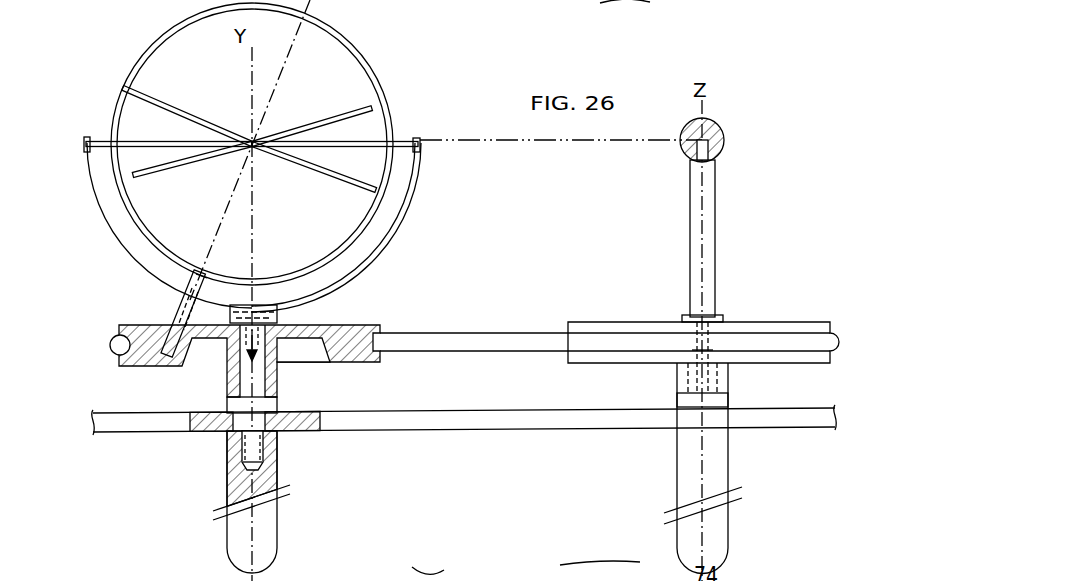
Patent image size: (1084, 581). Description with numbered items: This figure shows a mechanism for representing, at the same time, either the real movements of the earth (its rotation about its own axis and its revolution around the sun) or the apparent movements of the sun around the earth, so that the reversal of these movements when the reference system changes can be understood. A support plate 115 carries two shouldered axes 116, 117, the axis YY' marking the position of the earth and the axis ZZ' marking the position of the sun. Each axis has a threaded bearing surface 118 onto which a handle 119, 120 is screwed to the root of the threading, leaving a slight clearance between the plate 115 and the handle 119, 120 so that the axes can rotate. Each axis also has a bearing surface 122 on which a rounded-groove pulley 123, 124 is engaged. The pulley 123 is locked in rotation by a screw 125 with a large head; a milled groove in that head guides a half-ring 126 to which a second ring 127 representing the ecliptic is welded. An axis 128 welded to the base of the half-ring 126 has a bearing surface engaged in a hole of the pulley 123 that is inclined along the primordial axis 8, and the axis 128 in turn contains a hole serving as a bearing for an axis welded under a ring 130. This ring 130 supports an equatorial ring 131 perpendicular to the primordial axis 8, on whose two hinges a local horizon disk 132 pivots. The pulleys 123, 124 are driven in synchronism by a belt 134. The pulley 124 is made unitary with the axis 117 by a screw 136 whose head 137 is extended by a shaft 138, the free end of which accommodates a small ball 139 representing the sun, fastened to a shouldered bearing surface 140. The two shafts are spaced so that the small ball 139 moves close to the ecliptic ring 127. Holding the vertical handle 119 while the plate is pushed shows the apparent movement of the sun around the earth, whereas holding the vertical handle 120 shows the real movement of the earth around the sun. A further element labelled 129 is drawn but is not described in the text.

The primordial axis 8 is at (378, 79).
The support plate 115 is at (442, 428).
The shouldered axis 116 is at (278, 403).
The shouldered axis 117 is at (728, 403).
The threaded bearing surface 118 is at (265, 448).
The handle 119 is at (270, 490).
The handle 120 is at (728, 470).
The bearing surface 122 is at (223, 398).
The rounded-groove pulley 123 is at (142, 328).
The rounded-groove pulley 124 is at (807, 322).
The screw 125 is at (280, 314).
The half-ring 126 is at (108, 235).
The ring 127 is at (86, 140).
The axis 128 is at (177, 315).
The ball 129 is at (91, 333).
The ring 130 is at (129, 62).
The equatorial ring 131 is at (388, 178).
The local horizon disk 132 is at (373, 112).
The belt 134 is at (456, 333).
The screw 136 is at (740, 322).
The head 137 is at (718, 310).
The shaft 138 is at (707, 213).
The small ball 139 is at (720, 156).
The shouldered bearing surface 140 is at (724, 140).